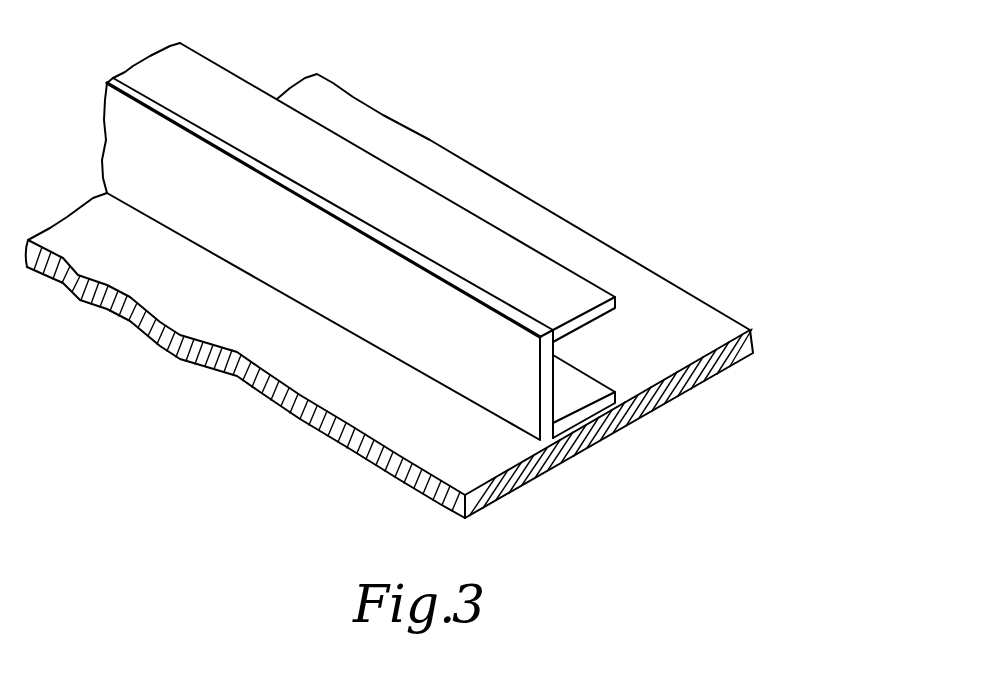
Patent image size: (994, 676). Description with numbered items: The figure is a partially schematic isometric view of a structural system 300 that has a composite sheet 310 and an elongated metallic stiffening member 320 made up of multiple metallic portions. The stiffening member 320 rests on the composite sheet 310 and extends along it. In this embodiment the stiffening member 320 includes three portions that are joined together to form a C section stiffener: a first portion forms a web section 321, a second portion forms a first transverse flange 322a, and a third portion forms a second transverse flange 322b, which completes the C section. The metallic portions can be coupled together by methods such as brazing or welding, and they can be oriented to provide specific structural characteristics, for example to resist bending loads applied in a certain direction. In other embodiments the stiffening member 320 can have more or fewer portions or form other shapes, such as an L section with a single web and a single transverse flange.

The structural system 300 is at (431, 280).
The composite sheet 310 is at (753, 347).
The elongated metallic stiffening member 320 is at (397, 260).
The web section 321 is at (272, 259).
The first transverse flange 322a is at (512, 249).
The second transverse flange 322b is at (568, 395).